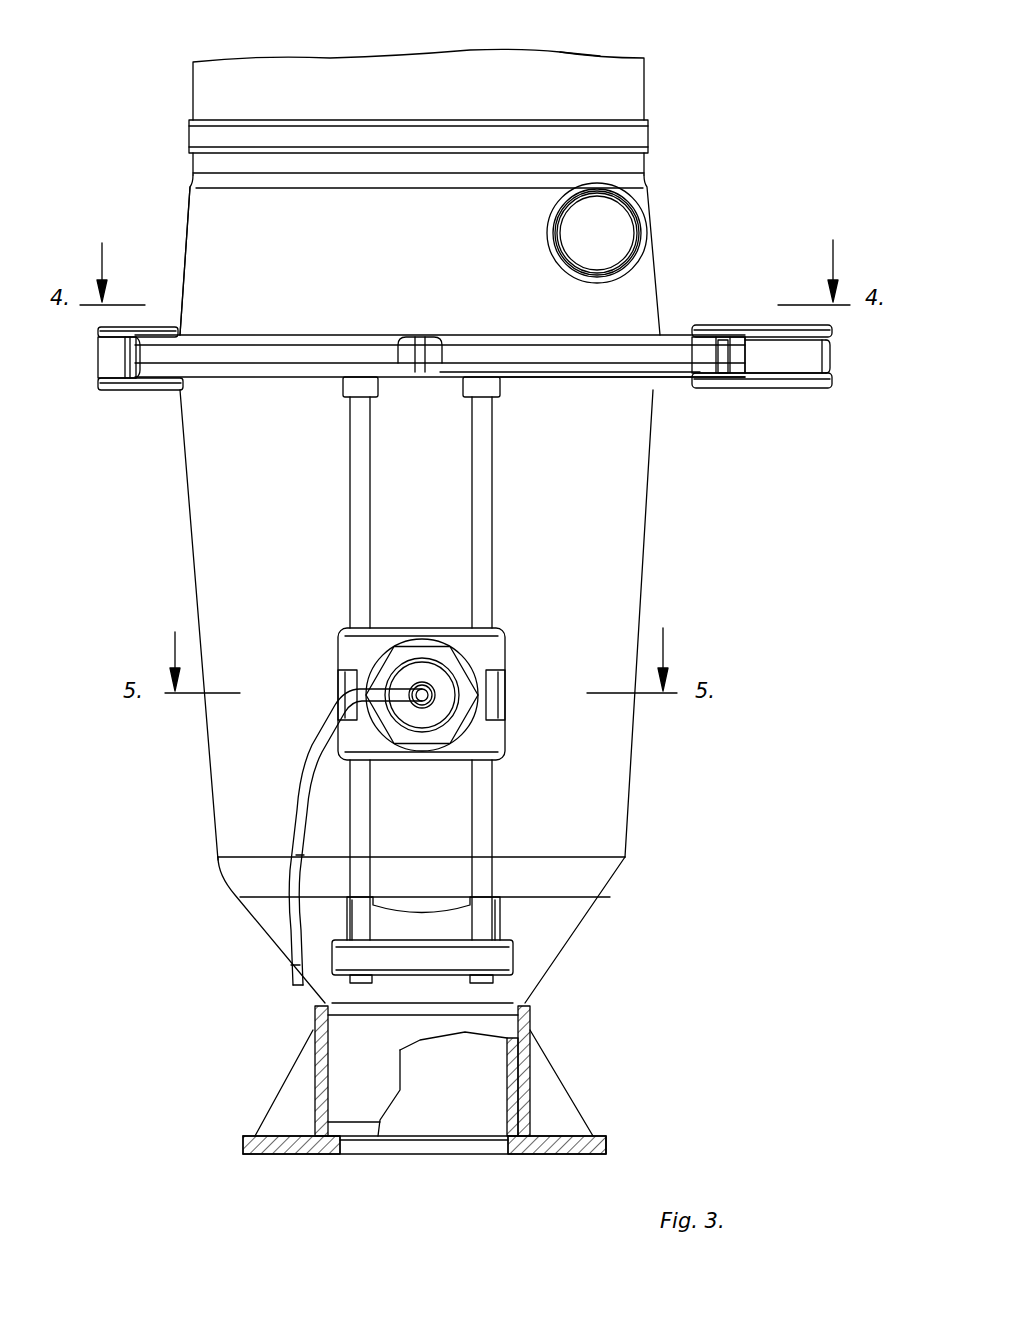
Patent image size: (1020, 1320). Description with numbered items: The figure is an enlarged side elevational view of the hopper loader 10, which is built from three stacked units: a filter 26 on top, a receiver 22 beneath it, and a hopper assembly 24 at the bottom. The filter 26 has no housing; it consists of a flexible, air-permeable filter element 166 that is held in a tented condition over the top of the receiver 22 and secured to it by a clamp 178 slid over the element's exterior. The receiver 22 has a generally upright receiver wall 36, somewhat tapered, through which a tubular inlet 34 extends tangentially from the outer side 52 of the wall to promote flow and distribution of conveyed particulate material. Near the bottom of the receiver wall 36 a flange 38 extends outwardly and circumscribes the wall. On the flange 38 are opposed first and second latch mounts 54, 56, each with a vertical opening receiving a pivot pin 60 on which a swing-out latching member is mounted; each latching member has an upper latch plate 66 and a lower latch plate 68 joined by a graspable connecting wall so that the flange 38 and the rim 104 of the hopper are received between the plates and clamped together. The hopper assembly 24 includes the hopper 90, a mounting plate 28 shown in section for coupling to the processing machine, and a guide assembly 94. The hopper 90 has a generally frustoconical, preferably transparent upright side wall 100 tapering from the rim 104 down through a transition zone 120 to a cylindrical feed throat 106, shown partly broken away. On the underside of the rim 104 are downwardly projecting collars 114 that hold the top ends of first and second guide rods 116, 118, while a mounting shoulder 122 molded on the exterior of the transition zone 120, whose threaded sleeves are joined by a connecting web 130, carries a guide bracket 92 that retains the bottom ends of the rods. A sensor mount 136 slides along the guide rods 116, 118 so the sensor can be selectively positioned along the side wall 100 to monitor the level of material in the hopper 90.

The hopper loader 10 is at (232, 1012).
The receiver 22 is at (429, 251).
The hopper assembly 24 is at (459, 696).
The filter 26 is at (655, 76).
The mounting plate 28 is at (451, 1095).
The tubular inlet 34 is at (548, 230).
The upright receiver wall 36 is at (192, 229).
The flange 38 is at (232, 338).
The outer side 52 is at (200, 198).
The first latch mount 54 is at (108, 353).
The second latch mount 56 is at (733, 373).
The pivot pin 60 is at (716, 351).
The upper latch plate 66 is at (143, 327).
The lower latch plate 68 is at (143, 390).
The hopper 90 is at (645, 512).
The guide bracket 92 is at (520, 945).
The guide assembly 94 is at (469, 679).
The upright side wall 100 is at (622, 786).
The rim 104 is at (538, 375).
The feed throat 106 is at (355, 1107).
The collars 114 is at (465, 392).
The first guide rod 116 is at (350, 510).
The second guide rod 118 is at (475, 510).
The transition zone 120 is at (555, 955).
The mounting shoulder 122 is at (395, 930).
The connecting web 130 is at (452, 905).
The sensor mount 136 is at (500, 742).
The filter element 166 is at (555, 60).
The clamp 178 is at (640, 133).